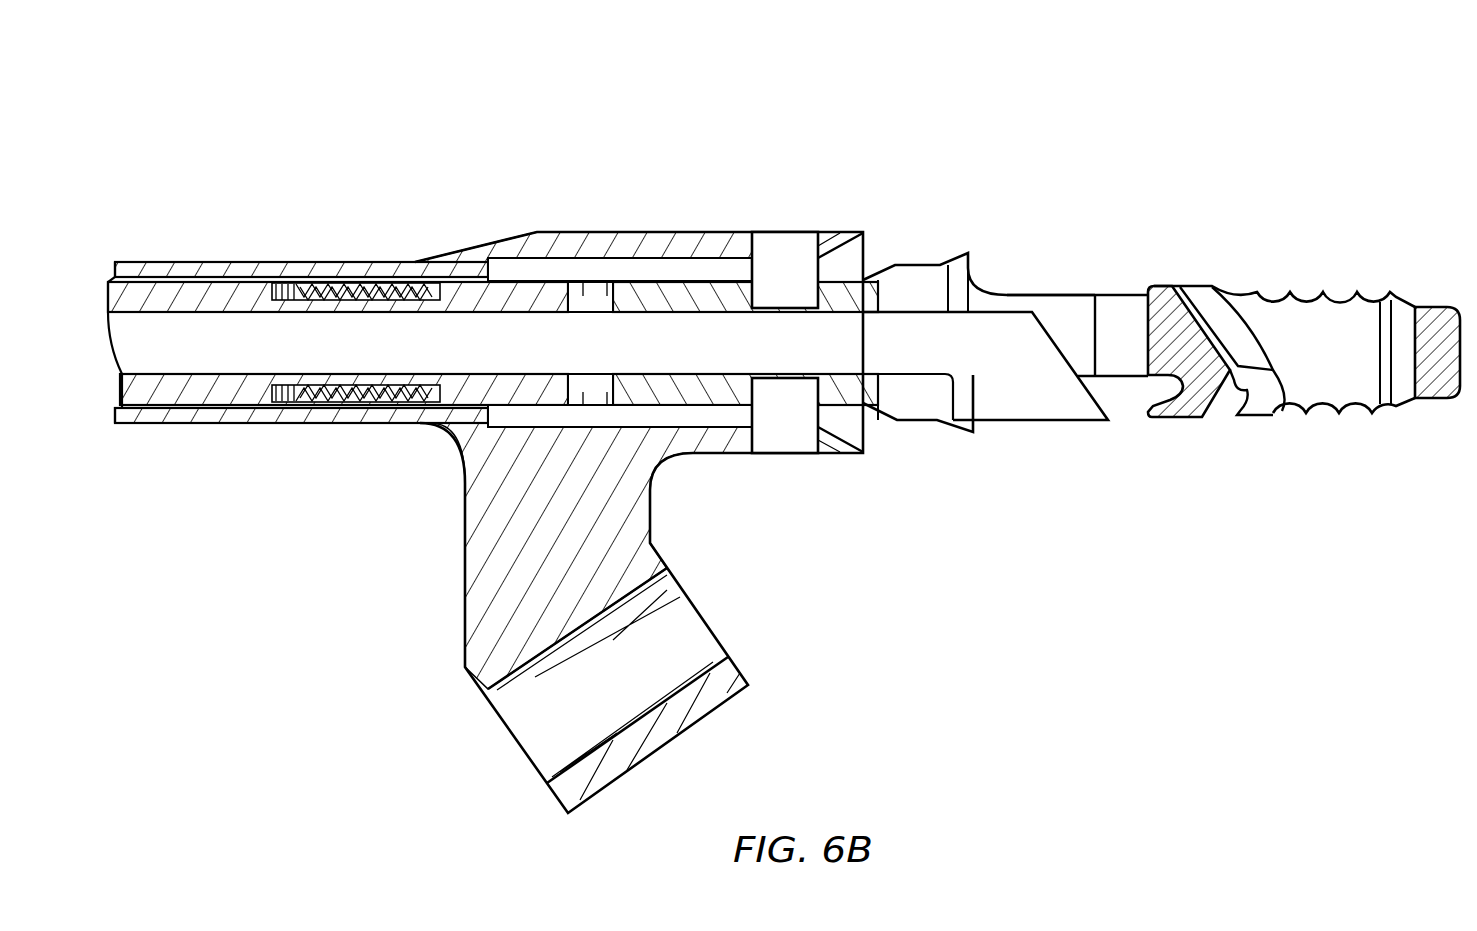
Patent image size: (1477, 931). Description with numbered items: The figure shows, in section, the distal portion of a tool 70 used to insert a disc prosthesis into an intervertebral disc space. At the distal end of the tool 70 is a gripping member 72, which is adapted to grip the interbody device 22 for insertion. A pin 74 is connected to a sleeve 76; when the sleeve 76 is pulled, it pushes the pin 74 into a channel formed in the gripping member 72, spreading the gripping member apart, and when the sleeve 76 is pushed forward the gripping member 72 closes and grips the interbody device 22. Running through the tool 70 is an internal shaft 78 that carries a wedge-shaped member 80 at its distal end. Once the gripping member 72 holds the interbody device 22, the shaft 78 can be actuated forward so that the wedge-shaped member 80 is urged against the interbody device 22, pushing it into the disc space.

The tool 70 is at (656, 108).
The sleeve 76 is at (582, 232).
The pin 74 is at (788, 243).
The internal shaft 78 is at (914, 323).
The wedge-shaped member 80 is at (1046, 424).
The distal gripping member 72 is at (1108, 295).
The interbody device 22 is at (1327, 290).